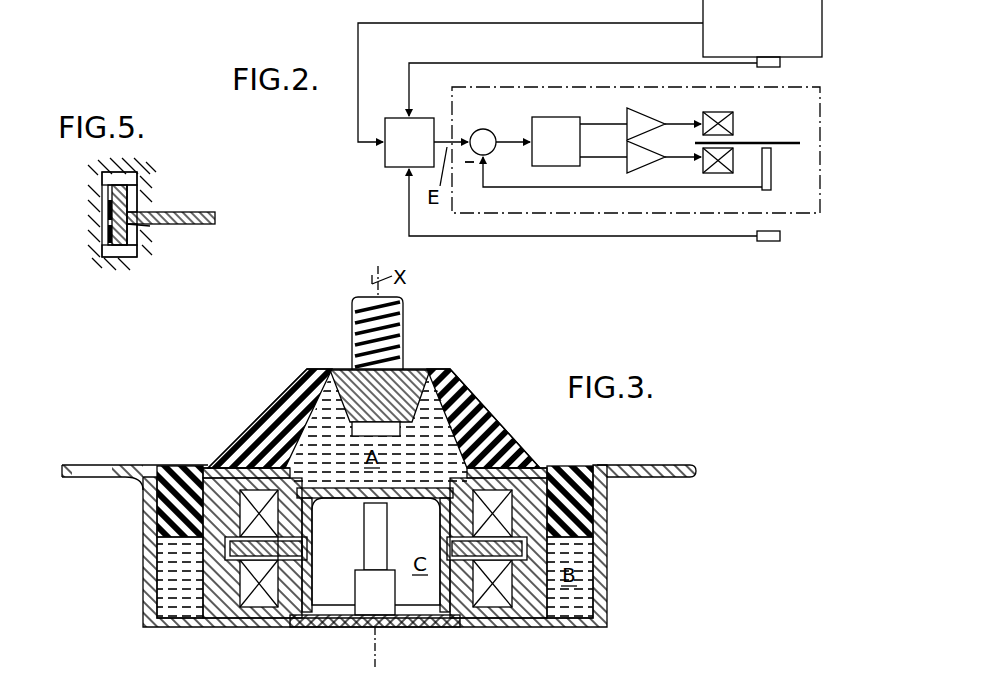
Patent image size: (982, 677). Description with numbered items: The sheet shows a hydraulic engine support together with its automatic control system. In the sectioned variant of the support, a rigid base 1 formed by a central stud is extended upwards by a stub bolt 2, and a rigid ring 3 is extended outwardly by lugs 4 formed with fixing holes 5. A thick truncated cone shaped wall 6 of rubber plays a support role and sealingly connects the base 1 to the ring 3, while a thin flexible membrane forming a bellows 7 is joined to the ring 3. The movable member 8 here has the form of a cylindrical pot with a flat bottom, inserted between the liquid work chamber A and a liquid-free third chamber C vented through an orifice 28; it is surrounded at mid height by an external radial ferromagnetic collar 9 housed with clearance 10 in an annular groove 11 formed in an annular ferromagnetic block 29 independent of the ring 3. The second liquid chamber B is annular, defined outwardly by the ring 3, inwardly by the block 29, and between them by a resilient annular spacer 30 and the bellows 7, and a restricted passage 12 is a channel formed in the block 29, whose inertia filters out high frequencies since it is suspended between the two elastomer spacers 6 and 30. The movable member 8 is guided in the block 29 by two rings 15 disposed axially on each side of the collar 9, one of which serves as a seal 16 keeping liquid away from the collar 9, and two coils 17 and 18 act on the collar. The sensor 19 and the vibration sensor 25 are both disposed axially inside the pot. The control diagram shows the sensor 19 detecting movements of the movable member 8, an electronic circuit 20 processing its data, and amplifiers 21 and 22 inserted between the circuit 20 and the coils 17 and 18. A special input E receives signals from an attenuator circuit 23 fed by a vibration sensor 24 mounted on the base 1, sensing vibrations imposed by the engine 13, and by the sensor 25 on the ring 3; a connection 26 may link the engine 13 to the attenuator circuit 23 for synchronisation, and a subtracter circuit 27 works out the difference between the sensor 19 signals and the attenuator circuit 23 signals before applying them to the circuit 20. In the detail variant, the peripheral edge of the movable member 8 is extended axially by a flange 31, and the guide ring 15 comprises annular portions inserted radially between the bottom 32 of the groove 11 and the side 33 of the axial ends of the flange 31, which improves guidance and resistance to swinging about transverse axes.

In FIG. 3, the rigid base 1 is at (345, 392).
In FIG. 3, the stub bolt 2 is at (403, 320).
In FIG. 5, the rigid ring 3 is at (100, 180).
In FIG. 3, the rigid ring 3 is at (143, 568).
In FIG. 3, the lugs 4 is at (70, 465).
In FIG. 3, the fixing holes 5 is at (112, 465).
In FIG. 3, the truncated cone shaped wall 6 is at (288, 425).
In FIG. 3, the bellows 7 is at (562, 620).
In FIG. 3, the movable member 8 is at (415, 499).
In FIG. 2, the collar 9 is at (783, 141).
In FIG. 5, the collar 9 is at (150, 226).
In FIG. 3, the collar 9 is at (238, 566).
In FIG. 5, the clearance 10 is at (150, 205).
In FIG. 3, the clearance 10 is at (272, 566).
In FIG. 5, the groove 11 is at (148, 232).
In FIG. 3, the groove 11 is at (311, 548).
In FIG. 3, the restricted passage 12 is at (540, 463).
In FIG. 2, the engine 13 is at (770, 29).
In FIG. 5, the guide rings 15 is at (114, 257).
In FIG. 3, the guide rings 15 is at (311, 590).
In FIG. 3, the seal 16 is at (318, 499).
In FIG. 2, the coil 17 is at (718, 173).
In FIG. 3, the coil 17 is at (262, 596).
In FIG. 2, the coil 18 is at (733, 126).
In FIG. 3, the coil 18 is at (210, 465).
In FIG. 2, the sensor 19 is at (771, 178).
In FIG. 3, the sensor 19 is at (380, 548).
In FIG. 2, the electronic circuit 20 is at (572, 155).
In FIG. 2, the amplifier 21 is at (640, 157).
In FIG. 2, the amplifier 22 is at (640, 124).
In FIG. 2, the attenuator circuit 23 is at (425, 155).
In FIG. 2, the vibration sensor 24 is at (780, 62).
In FIG. 3, the vibration sensor 24 is at (388, 430).
In FIG. 2, the vibration sensor 25 is at (780, 236).
In FIG. 3, the vibration sensor 25 is at (378, 595).
In FIG. 2, the connection 26 is at (432, 23).
In FIG. 2, the subtracter circuit 27 is at (491, 134).
In FIG. 3, the orifice 28 is at (330, 622).
In FIG. 3, the annular ferromagnetic block 29 is at (495, 616).
In FIG. 3, the annular spacer 30 is at (570, 465).
In FIG. 5, the flange 31 is at (128, 257).
In FIG. 5, the bottom of groove 32 is at (108, 215).
In FIG. 5, the side of flange 33 is at (108, 232).